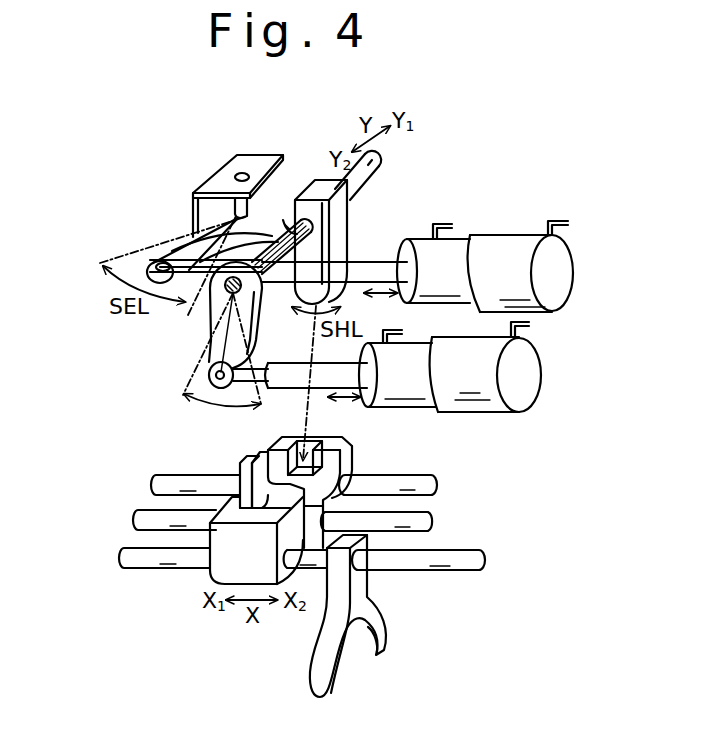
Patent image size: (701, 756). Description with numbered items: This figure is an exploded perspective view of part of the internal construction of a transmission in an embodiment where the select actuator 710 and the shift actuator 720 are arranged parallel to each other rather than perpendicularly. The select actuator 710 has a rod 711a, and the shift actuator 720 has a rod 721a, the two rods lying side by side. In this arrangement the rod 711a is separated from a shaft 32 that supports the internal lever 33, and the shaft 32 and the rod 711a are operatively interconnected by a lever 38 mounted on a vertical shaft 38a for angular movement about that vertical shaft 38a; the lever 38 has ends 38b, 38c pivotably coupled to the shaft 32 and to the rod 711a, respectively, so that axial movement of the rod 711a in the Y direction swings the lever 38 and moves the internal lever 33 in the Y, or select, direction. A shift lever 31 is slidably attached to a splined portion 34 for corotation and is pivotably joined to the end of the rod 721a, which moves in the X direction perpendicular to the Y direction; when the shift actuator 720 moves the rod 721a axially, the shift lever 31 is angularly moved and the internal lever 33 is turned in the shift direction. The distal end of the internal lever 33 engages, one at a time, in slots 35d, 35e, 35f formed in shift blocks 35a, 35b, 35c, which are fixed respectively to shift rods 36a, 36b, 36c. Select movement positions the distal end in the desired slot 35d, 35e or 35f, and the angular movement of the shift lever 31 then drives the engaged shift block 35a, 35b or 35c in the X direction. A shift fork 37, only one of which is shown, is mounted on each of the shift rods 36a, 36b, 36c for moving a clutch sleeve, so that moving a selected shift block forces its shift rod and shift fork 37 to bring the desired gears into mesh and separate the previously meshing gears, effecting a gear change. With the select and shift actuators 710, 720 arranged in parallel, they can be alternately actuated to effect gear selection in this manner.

The shift lever 31 is at (213, 310).
The shaft 32 is at (380, 160).
The internal lever 33 is at (347, 207).
The splined portion 34 is at (173, 250).
The shift block 35a is at (340, 467).
The shift block 35b is at (398, 507).
The shift block 35c is at (213, 570).
The slot 35d is at (323, 443).
The slot 35e is at (262, 467).
The slot 35f is at (246, 503).
The shift rod 36a is at (437, 477).
The shift rod 36b is at (433, 523).
The shift rod 36c is at (473, 569).
The shift fork 37 is at (380, 621).
The lever 38 is at (175, 253).
The vertical shaft 38a is at (248, 212).
The end of lever 38b is at (333, 233).
The end of lever 38c is at (147, 272).
The select actuator 710 is at (505, 243).
The rod 711a is at (382, 265).
The shift actuator 720 is at (473, 397).
The rod 721a is at (307, 383).